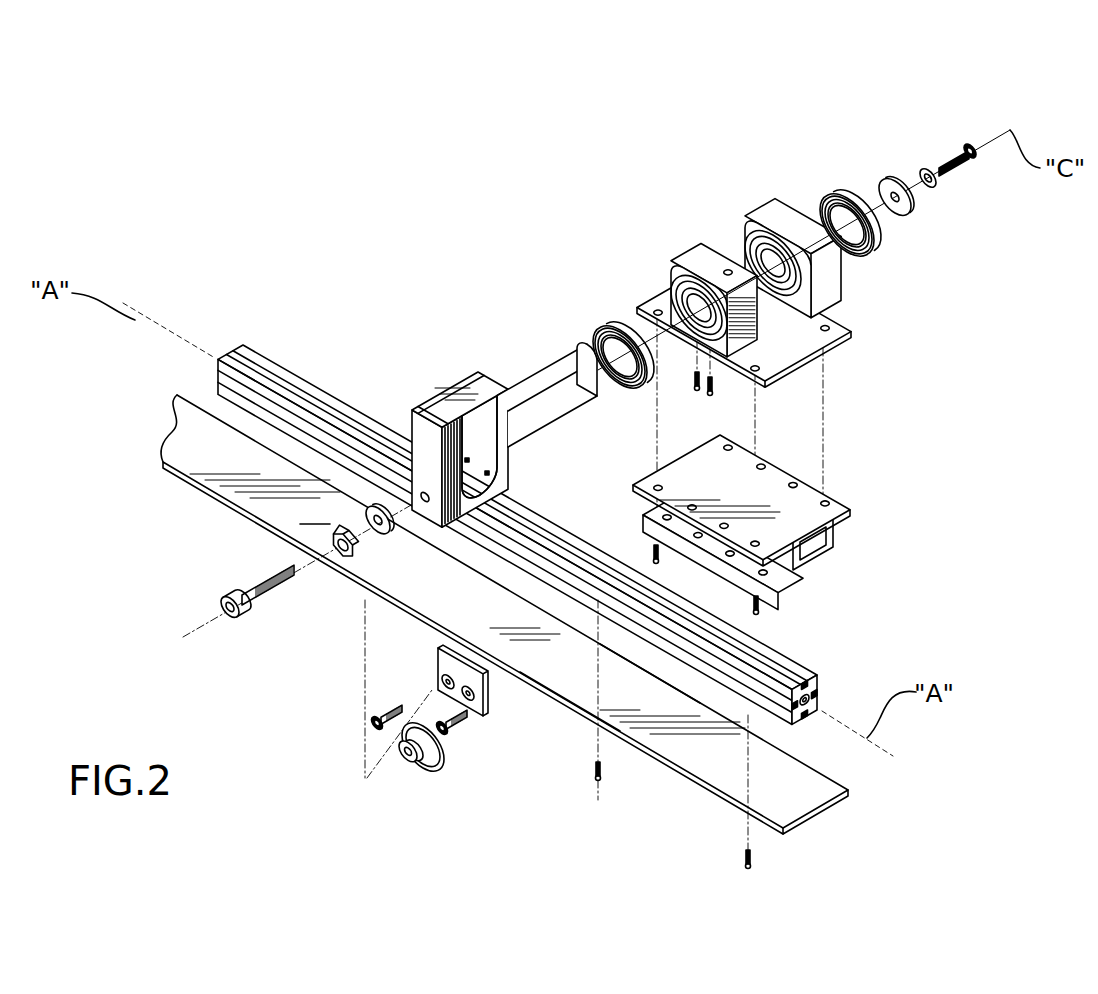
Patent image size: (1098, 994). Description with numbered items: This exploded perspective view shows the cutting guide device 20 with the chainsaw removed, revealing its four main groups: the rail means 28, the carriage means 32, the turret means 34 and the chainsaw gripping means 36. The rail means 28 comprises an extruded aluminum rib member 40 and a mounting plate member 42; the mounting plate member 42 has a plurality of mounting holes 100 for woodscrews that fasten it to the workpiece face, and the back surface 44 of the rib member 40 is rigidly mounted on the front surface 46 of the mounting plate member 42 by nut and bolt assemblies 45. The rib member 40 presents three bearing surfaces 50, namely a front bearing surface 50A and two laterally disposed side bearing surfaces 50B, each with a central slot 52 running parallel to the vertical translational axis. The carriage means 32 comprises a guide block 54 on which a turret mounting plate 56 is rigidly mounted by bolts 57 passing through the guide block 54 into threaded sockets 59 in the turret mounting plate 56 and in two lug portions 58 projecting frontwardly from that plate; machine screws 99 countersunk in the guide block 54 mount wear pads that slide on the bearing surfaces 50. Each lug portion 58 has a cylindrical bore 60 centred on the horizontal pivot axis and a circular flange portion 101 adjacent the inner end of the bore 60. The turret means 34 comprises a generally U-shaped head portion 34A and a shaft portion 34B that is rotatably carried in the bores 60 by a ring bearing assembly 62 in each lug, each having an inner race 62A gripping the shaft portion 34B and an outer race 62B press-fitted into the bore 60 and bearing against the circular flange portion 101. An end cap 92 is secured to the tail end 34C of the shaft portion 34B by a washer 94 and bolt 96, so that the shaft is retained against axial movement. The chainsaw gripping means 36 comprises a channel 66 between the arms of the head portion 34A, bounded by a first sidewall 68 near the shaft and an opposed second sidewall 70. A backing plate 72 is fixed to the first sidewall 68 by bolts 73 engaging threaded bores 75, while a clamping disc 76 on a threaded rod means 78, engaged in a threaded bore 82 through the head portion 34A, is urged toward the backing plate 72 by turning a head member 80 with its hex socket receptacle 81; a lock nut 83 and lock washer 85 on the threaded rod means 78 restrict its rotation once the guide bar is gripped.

The cutting guide device 20 is at (518, 133).
The rail means 28 is at (823, 728).
The carriage means 32 is at (837, 399).
The turret means 34 is at (462, 356).
The head portion 34A is at (462, 388).
The shaft portion 34B is at (558, 380).
The tail end 34C is at (600, 396).
The chainsaw gripping means 36 is at (469, 802).
The rib member 40 is at (343, 381).
The mounting plate member 42 is at (187, 460).
The back surface 44 is at (250, 420).
The nut and bolt assemblies 45 is at (596, 778).
The front surface 46 is at (315, 512).
The bearing surfaces 50 is at (108, 246).
The front bearing surface 50A is at (217, 358).
The side bearing surfaces 50B is at (324, 370).
The slot 52 is at (780, 697).
The guide block 54 is at (842, 517).
The turret mounting plate 56 is at (852, 338).
The bolts 57 is at (655, 556).
The lug portions 58 is at (814, 293).
The threaded sockets 59 is at (657, 308).
The cylindrical bore 60 is at (812, 302).
The ring bearing assembly 62 is at (632, 392).
The inner race 62A is at (607, 333).
The outer race 62B is at (622, 333).
The channel 66 is at (474, 441).
The first sidewall 68 is at (489, 495).
The second sidewall 70 is at (472, 512).
The backing plate 72 is at (486, 700).
The bolts 73 is at (440, 722).
The threaded bores 75 is at (469, 460).
The clamping disc 76 is at (444, 752).
The threaded rod means 78 is at (283, 575).
The head member 80 is at (225, 603).
The hex socket receptacle 81 is at (218, 622).
The threaded bore 82 is at (421, 497).
The lock nut 83 is at (338, 556).
The lock washer 85 is at (374, 532).
The end cap 92 is at (883, 185).
The washer 94 is at (921, 172).
The bolt 96 is at (957, 158).
The machine screws 99 is at (669, 522).
The mounting holes 100 is at (689, 705).
The circular flange portion 101 is at (739, 285).